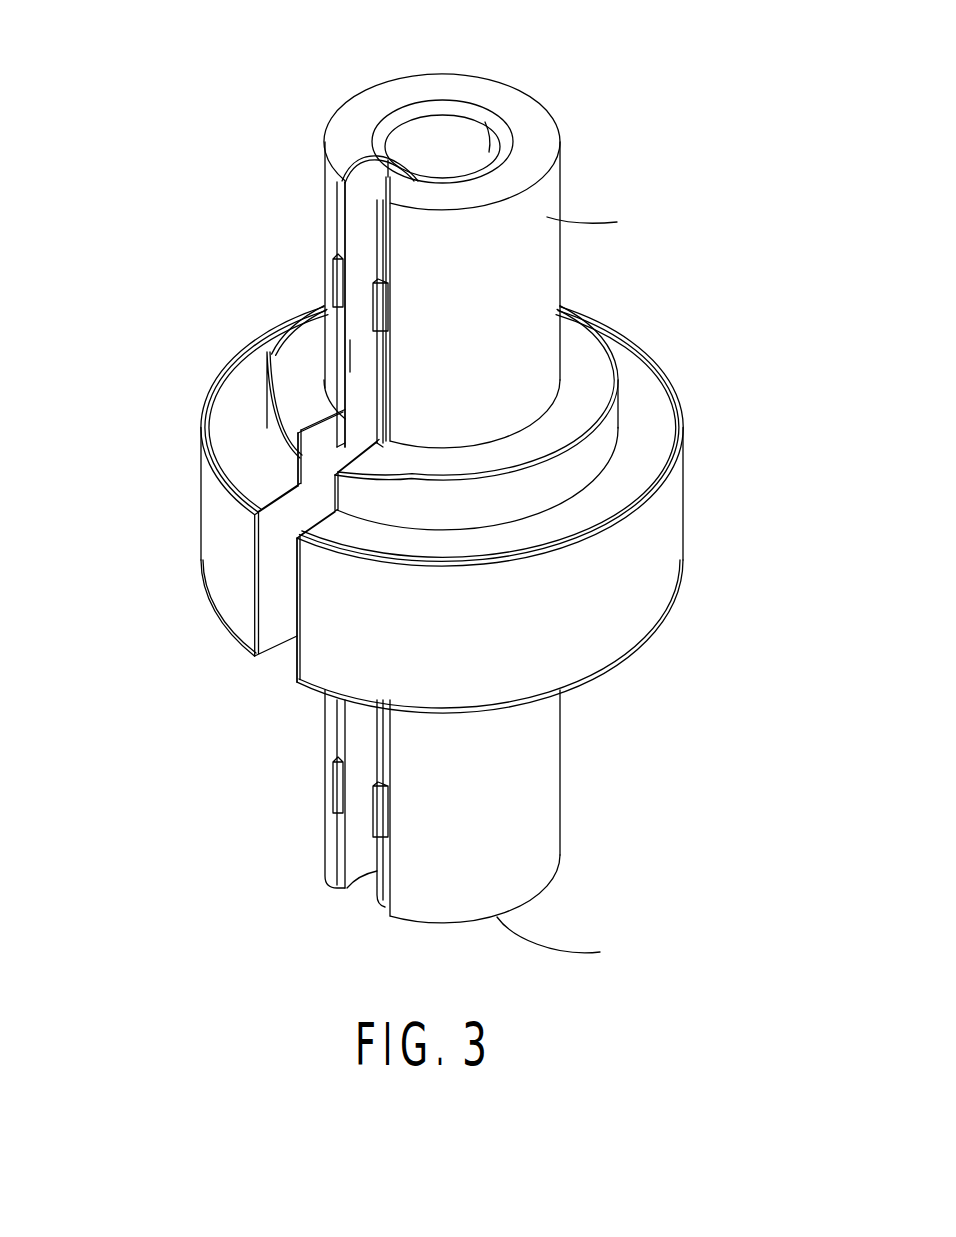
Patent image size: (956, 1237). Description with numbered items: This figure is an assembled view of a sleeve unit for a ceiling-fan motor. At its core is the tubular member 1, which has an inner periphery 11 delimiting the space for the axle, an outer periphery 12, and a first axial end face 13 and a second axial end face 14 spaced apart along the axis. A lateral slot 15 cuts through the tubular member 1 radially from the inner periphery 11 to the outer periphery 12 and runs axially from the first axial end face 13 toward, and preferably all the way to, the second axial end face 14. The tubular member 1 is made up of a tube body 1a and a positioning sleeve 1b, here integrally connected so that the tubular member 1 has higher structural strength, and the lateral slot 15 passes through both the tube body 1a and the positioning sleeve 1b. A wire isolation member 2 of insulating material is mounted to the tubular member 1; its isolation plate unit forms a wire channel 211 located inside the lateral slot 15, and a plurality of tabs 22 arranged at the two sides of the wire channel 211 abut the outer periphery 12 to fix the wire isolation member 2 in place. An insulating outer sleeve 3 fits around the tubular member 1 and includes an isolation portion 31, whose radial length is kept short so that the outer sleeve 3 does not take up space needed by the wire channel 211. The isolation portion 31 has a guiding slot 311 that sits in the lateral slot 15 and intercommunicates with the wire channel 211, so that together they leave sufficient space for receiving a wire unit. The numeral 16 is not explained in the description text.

The tubular member 1 is at (466, 484).
The tube body 1a is at (507, 750).
The positioning sleeve 1b is at (648, 708).
The inner periphery 11 is at (487, 125).
The outer periphery 12 is at (598, 222).
The first axial end face 13 is at (497, 97).
The second axial end face 14 is at (563, 943).
The lateral slot 15 is at (340, 175).
The annular step 16 is at (610, 434).
The wire isolation member 2 is at (271, 541).
The tabs 22 is at (331, 273).
The wire channel 211 is at (335, 354).
The outer sleeve 3 is at (449, 509).
The isolation portion 31 is at (298, 458).
The guiding slot 311 is at (262, 551).